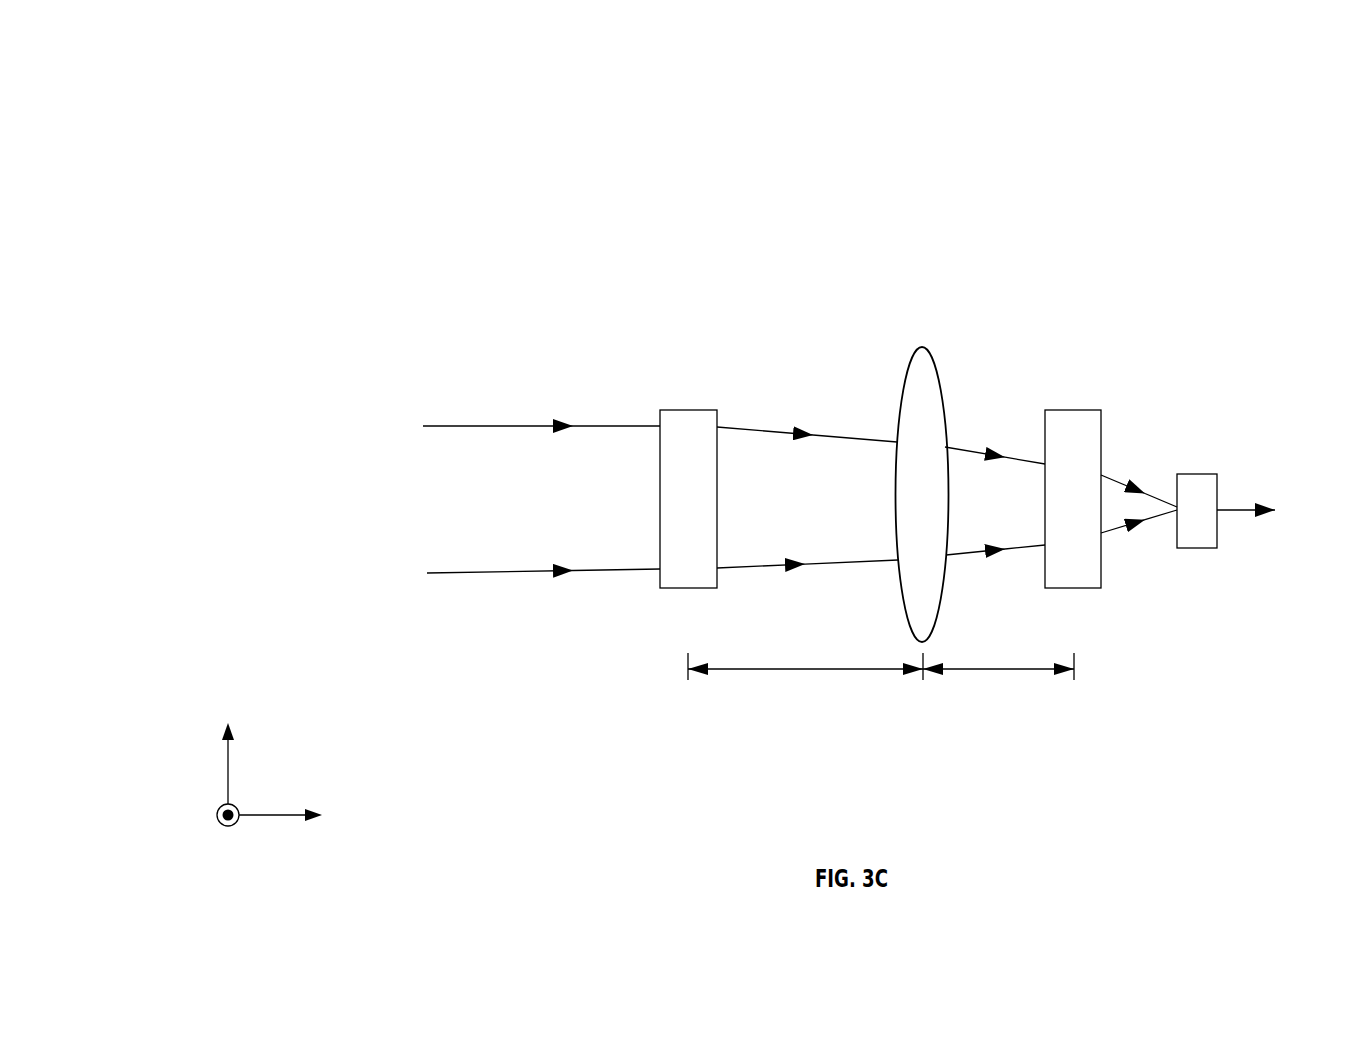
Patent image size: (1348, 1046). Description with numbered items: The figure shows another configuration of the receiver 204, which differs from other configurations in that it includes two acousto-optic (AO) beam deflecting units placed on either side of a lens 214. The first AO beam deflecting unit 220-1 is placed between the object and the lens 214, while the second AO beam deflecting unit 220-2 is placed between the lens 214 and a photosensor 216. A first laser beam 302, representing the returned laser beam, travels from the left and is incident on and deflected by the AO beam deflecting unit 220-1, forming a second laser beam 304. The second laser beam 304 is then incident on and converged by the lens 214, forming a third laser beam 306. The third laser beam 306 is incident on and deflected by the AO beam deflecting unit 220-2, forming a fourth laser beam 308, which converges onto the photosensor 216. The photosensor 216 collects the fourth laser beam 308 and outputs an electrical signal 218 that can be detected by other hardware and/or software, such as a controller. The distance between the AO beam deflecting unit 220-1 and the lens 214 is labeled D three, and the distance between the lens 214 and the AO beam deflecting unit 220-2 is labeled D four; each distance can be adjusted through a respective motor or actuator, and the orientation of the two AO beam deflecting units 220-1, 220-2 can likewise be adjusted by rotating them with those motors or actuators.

The receiver 204 is at (843, 130).
The first laser beam 302 is at (541, 465).
The AO beam deflecting unit 220-1 is at (717, 465).
The second laser beam 304 is at (807, 465).
The lens 214 is at (955, 459).
The third laser beam 306 is at (995, 468).
The AO beam deflecting unit 220-2 is at (1103, 465).
The fourth laser beam 308 is at (1150, 470).
The photosensor 216 is at (1237, 488).
The electrical signal 218 is at (1270, 510).